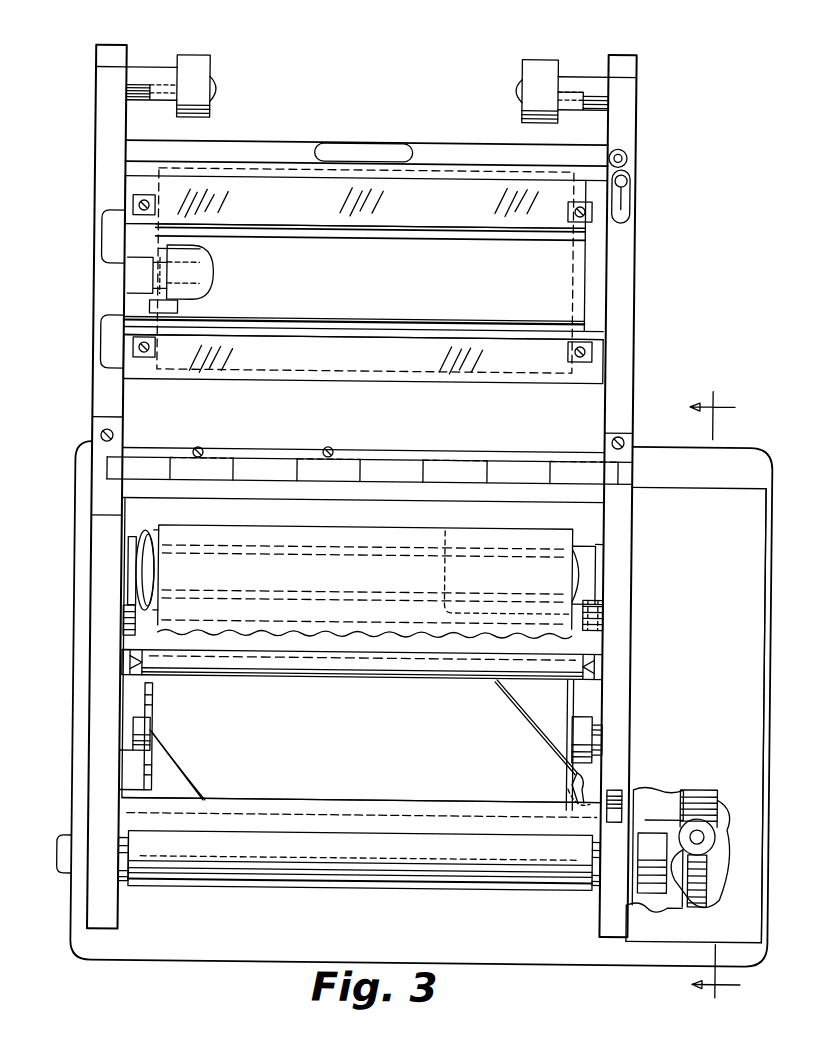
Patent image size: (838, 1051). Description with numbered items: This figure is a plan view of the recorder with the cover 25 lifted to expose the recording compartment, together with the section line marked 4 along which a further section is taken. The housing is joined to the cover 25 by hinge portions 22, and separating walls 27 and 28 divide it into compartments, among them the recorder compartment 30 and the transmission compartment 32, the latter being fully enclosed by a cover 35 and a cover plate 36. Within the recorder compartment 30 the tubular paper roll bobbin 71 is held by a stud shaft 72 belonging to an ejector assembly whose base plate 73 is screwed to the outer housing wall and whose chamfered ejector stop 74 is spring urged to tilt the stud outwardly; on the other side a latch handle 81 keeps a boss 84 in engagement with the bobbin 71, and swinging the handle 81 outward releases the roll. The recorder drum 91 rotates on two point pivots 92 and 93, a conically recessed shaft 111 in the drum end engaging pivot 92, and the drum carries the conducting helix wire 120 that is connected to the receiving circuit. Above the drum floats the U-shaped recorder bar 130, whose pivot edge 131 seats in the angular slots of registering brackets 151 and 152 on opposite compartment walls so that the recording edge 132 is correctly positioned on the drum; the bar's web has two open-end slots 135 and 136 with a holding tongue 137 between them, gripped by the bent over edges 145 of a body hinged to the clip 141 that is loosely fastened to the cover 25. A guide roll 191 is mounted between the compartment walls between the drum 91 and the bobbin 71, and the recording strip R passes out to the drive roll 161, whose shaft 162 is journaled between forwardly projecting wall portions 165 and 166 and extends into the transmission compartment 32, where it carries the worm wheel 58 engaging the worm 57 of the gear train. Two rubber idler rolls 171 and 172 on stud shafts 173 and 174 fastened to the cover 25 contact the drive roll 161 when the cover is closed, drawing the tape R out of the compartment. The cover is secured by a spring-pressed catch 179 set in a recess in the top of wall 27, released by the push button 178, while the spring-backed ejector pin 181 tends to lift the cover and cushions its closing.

The cover 25 is at (106, 178).
The stud shaft 173 is at (153, 74).
The idler roll 171 is at (191, 64).
The idler roll 172 is at (535, 61).
The stud shaft 174 is at (568, 75).
The ejector pin 181 is at (627, 151).
The push button 178 is at (627, 192).
The recorder bar 130 is at (358, 254).
The pivot edge 131 is at (320, 334).
The recording edge 132 is at (407, 239).
The bent over edges 145 is at (218, 264).
The holding tongue 137 is at (207, 264).
The clip 141 is at (205, 284).
The open-end slot 136 is at (179, 252).
The open-end slot 135 is at (175, 307).
The hinge portions 22 is at (504, 472).
The cover 35 is at (748, 526).
The cover plate 36 is at (766, 630).
The separating wall 27 is at (623, 597).
The paper roll bobbin 71 is at (312, 546).
The stud shaft 72 is at (465, 548).
The recording strip R is at (225, 528).
The boss 84 is at (157, 572).
The handle 81 is at (136, 569).
The base plate 73 is at (598, 562).
The ejector stop 74 is at (586, 575).
The registering bracket 152 is at (594, 620).
The registering bracket 151 is at (128, 625).
The guide roll 191 is at (270, 669).
The conically recessed shaft 111 is at (138, 720).
The point pivot 92 is at (132, 743).
The recorder drum 91 is at (152, 767).
The helix wire 120 is at (187, 797).
The recorder compartment 30 is at (588, 703).
The point pivot 93 is at (594, 740).
The catch 179 is at (621, 787).
The separating wall 28 is at (368, 800).
The drive roll 161 is at (432, 872).
The wall portion 165 is at (109, 914).
The shaft 162 is at (596, 878).
The wall portion 166 is at (609, 923).
The transmission compartment 32 is at (670, 897).
The worm 57 is at (691, 797).
The worm wheel 58 is at (711, 890).
The section line 4 is at (725, 683).